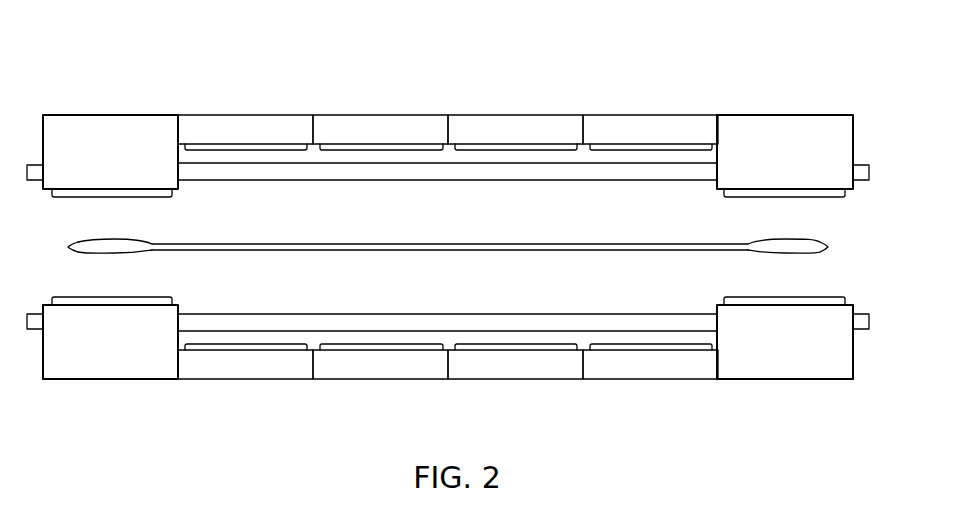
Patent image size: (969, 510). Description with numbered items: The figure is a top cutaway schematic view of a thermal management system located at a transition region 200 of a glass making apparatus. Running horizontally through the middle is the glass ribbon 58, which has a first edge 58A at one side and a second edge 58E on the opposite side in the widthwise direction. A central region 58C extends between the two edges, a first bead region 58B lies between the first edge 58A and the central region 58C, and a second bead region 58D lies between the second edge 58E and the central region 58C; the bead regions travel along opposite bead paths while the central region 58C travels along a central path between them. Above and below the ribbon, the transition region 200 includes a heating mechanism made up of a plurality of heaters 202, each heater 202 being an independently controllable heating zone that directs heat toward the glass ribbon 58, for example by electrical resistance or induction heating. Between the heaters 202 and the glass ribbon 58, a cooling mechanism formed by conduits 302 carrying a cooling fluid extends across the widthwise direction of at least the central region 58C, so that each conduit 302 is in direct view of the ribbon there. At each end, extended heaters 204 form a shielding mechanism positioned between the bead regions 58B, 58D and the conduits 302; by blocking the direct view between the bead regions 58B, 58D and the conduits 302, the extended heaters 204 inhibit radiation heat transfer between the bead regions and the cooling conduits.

The transition region 200 is at (703, 70).
The heater 202 is at (253, 115).
The extended heater 204 is at (122, 115).
The conduit 302 is at (315, 181).
The glass ribbon 58 is at (449, 246).
The first edge 58A is at (72, 249).
The first bead region 58B is at (110, 240).
The central region 58C is at (448, 243).
The second bead region 58D is at (792, 240).
The second edge 58E is at (827, 249).